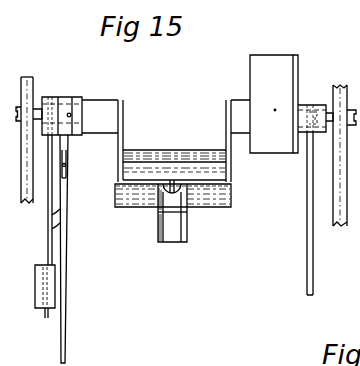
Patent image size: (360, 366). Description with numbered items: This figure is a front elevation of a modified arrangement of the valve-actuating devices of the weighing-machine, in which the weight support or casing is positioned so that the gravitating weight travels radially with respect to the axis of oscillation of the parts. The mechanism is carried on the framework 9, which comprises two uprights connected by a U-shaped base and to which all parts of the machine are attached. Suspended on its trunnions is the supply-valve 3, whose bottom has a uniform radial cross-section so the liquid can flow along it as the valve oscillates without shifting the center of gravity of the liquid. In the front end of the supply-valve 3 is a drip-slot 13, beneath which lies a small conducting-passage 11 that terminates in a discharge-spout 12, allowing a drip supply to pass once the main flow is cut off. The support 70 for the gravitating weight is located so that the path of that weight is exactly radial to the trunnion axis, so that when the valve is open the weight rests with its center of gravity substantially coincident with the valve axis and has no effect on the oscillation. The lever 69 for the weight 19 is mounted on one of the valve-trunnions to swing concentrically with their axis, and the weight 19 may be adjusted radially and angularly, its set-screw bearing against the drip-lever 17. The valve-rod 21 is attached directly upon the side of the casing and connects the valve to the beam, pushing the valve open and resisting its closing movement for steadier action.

The supply-valve 3 is at (232, 195).
The framework 9 is at (25, 160).
The conducting-passage 11 is at (163, 205).
The discharge-spout 12 is at (170, 242).
The drip-slot 13 is at (176, 187).
The drip-lever 17 is at (65, 251).
The weight 19 is at (35, 291).
The valve-rod 21 is at (313, 257).
The lever 69 is at (47, 241).
The support 70 is at (274, 104).